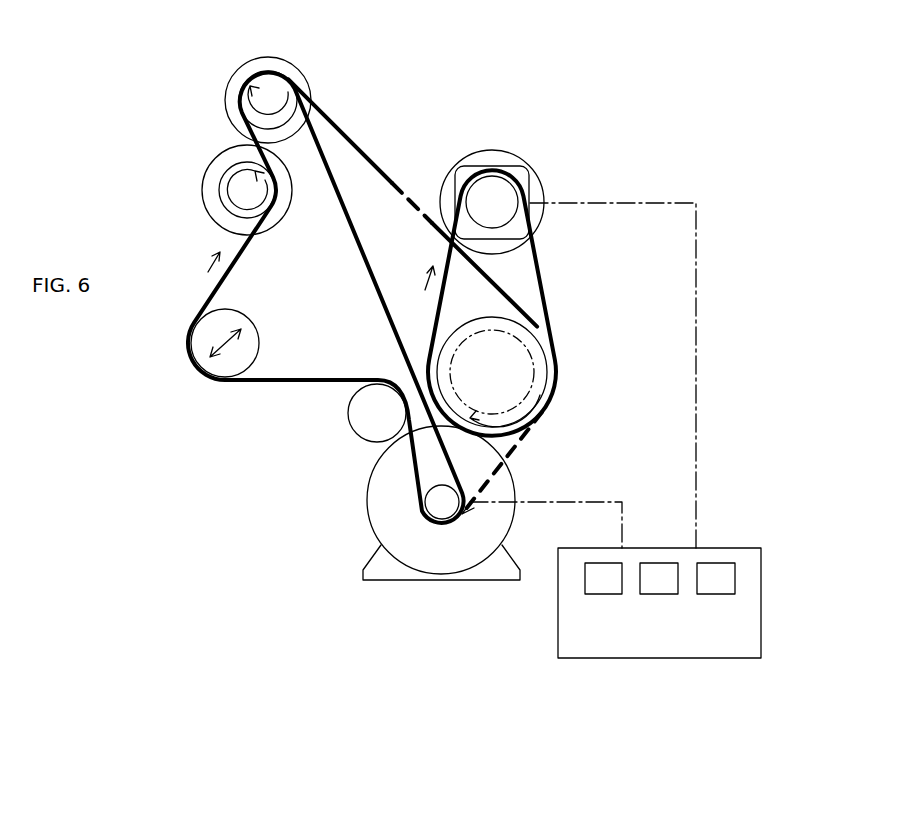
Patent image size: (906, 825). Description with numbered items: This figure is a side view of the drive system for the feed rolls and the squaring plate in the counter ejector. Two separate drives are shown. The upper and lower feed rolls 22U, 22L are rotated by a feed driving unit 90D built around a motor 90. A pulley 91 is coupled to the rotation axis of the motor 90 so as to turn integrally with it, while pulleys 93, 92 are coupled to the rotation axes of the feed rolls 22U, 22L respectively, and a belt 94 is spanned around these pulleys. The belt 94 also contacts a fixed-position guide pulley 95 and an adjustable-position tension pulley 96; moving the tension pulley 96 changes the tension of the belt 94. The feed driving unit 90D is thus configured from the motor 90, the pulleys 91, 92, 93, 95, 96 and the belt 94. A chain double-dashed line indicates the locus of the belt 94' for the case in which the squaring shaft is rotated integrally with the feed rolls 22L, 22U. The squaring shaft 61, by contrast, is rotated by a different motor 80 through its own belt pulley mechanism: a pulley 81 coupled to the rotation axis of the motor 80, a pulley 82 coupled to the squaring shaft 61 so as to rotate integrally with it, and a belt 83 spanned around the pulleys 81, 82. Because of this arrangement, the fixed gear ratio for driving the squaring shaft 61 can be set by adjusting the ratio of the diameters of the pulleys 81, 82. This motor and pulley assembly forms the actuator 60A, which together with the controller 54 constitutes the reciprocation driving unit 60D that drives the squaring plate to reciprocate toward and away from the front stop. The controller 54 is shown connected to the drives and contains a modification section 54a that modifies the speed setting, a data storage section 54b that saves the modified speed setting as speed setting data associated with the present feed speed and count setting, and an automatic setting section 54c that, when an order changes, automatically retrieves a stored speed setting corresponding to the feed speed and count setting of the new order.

The feed roll 22U is at (232, 87).
The feed roll 22L is at (210, 173).
The pulley 93 is at (272, 82).
The pulley 92 is at (228, 200).
The belt 94 is at (326, 298).
The belt 94' is at (415, 296).
The tension pulley 96 is at (257, 340).
The guide pulley 95 is at (350, 422).
The motor 90 is at (368, 496).
The pulley 91 is at (441, 510).
The feed driving unit 90D is at (447, 95).
The motor 80 is at (517, 175).
The pulley 81 is at (483, 186).
The belt 83 is at (548, 262).
The actuator 60A is at (573, 300).
The pulley 82 is at (540, 345).
The squaring shaft 61 is at (542, 365).
The reciprocation driving unit 60D is at (742, 283).
The controller 54 is at (763, 598).
The modification section 54a is at (603, 596).
The data storage section 54b is at (659, 596).
The automatic setting section 54c is at (715, 596).